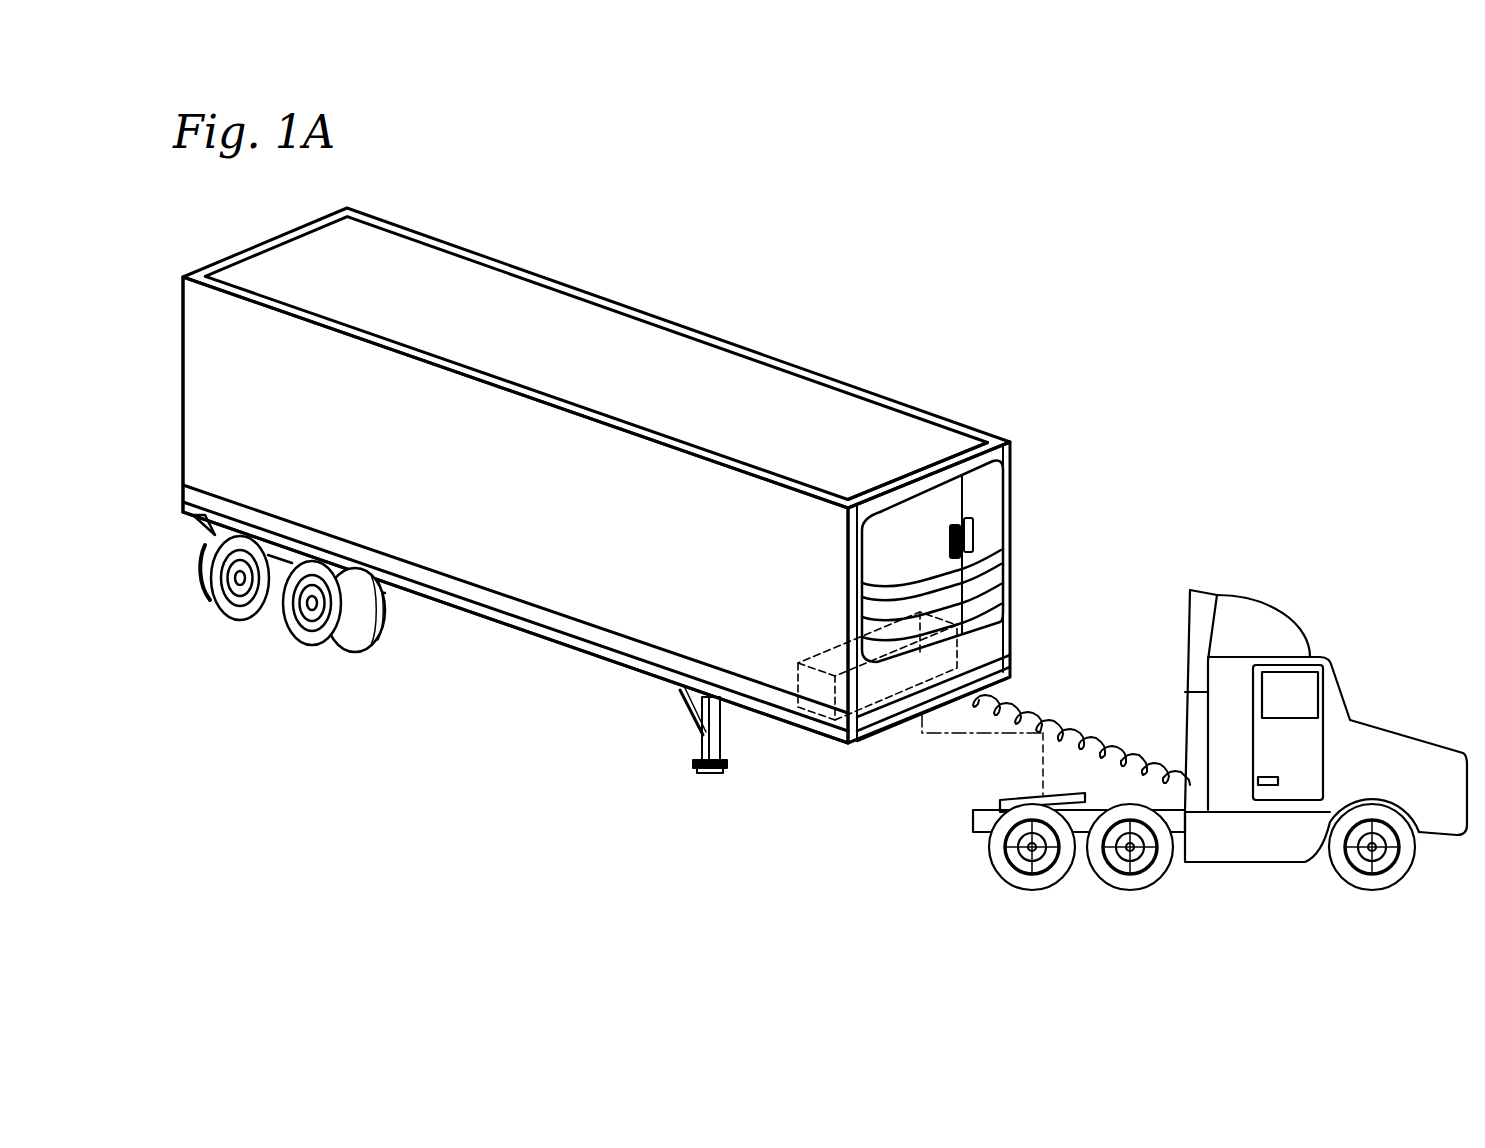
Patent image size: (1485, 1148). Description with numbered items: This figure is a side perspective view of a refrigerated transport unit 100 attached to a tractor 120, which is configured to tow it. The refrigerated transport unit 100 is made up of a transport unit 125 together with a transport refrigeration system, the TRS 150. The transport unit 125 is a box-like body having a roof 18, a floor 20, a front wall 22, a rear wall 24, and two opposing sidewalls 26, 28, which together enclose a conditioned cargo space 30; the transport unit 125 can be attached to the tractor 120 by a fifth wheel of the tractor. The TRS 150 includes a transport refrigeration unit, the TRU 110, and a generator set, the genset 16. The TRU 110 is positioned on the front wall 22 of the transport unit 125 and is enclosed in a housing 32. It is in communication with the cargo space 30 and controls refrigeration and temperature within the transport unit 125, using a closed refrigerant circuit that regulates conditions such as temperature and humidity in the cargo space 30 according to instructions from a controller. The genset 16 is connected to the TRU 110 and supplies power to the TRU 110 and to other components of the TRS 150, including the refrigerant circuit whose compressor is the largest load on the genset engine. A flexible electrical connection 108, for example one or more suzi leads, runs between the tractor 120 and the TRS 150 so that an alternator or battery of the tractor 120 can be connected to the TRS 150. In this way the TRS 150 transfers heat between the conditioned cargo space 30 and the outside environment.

The generator set (genset) 16 is at (800, 665).
The roof 18 is at (430, 277).
The floor 20 is at (473, 607).
The front wall 22 is at (1005, 445).
The rear wall 24 is at (213, 382).
The sidewall 26 is at (283, 470).
The sidewall 28 is at (508, 292).
The conditioned cargo space 30 is at (813, 443).
The housing 32 is at (998, 543).
The refrigerated transport unit 100 is at (705, 295).
The flexible electrical connection 108 is at (1060, 714).
The TRU (transport refrigeration unit) 110 is at (990, 511).
The tractor 120 is at (1391, 731).
The transport unit 125 is at (713, 362).
The TRS (transport refrigeration system) 150 is at (1090, 282).